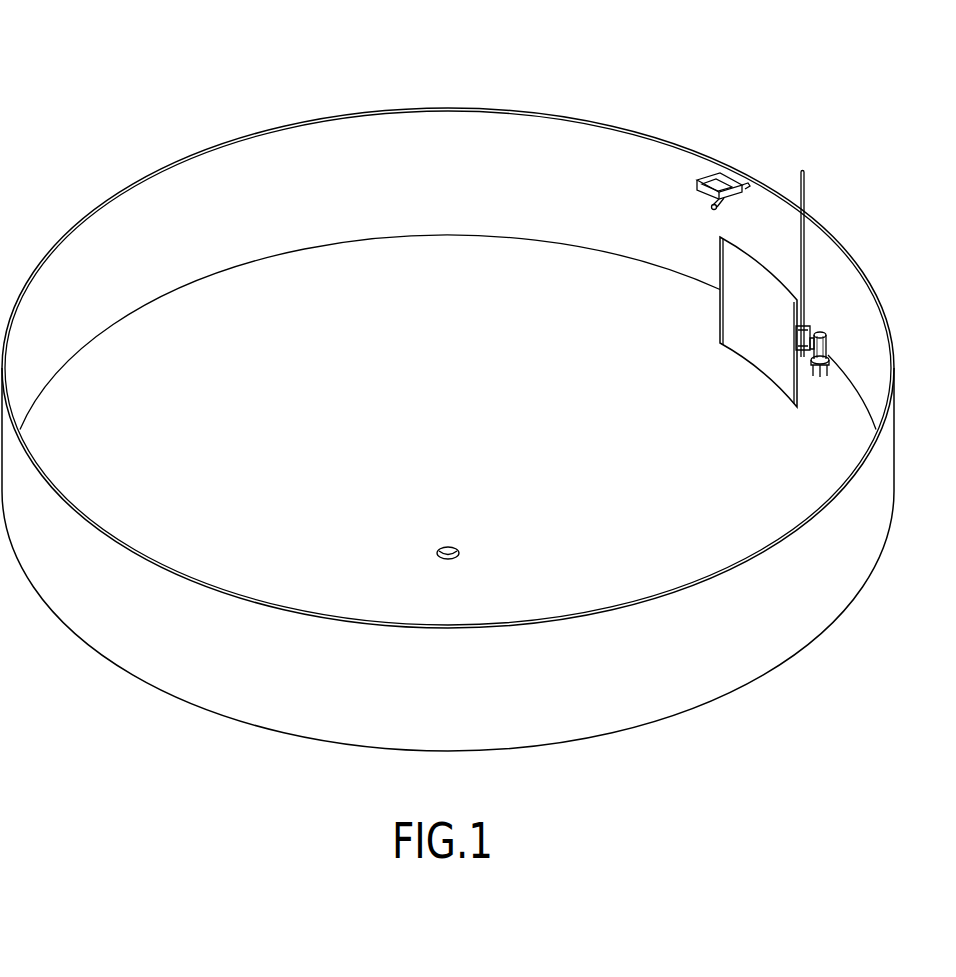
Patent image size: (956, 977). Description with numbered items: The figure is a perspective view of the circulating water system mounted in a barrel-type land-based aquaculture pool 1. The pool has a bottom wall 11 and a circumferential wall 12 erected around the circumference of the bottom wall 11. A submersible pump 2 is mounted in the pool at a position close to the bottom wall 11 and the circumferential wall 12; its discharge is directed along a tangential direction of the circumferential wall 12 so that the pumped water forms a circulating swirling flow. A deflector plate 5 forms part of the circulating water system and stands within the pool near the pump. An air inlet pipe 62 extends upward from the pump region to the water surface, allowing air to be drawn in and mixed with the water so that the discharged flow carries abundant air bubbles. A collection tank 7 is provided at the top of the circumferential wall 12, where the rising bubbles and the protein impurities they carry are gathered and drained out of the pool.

The land-based aquaculture pool 1 is at (448, 381).
The bottom wall 11 is at (483, 275).
The circumferential wall 12 is at (267, 160).
The deflector plate 5 is at (750, 355).
The air inlet pipe 62 is at (807, 208).
The submersible pump 2 is at (827, 342).
The collection tank 7 is at (722, 180).